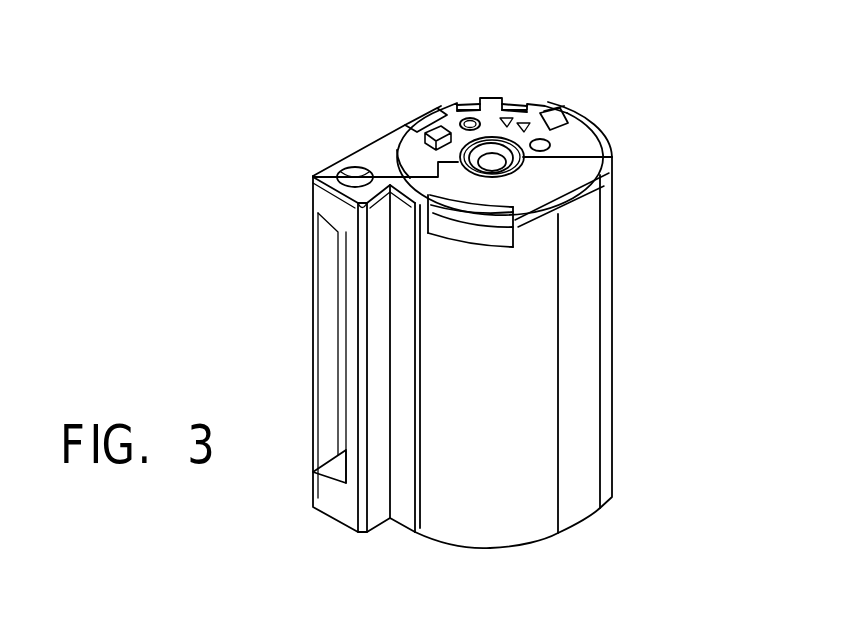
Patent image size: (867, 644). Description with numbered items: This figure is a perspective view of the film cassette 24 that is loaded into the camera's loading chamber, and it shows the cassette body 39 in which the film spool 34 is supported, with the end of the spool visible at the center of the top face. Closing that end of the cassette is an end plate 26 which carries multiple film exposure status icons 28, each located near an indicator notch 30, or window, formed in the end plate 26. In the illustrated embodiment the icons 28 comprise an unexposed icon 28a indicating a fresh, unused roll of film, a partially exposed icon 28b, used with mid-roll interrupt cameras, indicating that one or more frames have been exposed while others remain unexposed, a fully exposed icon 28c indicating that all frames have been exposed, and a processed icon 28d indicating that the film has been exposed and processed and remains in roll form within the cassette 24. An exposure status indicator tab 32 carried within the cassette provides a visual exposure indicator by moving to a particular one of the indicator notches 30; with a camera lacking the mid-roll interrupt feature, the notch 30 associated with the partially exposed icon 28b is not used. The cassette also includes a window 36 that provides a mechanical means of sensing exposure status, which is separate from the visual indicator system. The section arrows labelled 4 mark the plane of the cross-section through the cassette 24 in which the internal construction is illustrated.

The film cassette 24 is at (266, 160).
The end plate 26 is at (398, 157).
The film exposure status icons 28 is at (563, 183).
The unexposed icon 28a is at (603, 180).
The partially exposed icon 28b is at (510, 106).
The fully exposed icon 28c is at (468, 104).
The processed icon 28d is at (430, 118).
The indicator notch 30 is at (453, 90).
The exposure status indicator tab 32 is at (593, 120).
The film spool 34 is at (493, 165).
The window 36 is at (452, 234).
The cassette body 39 is at (508, 491).
The section line 4- 4 is at (222, 325).